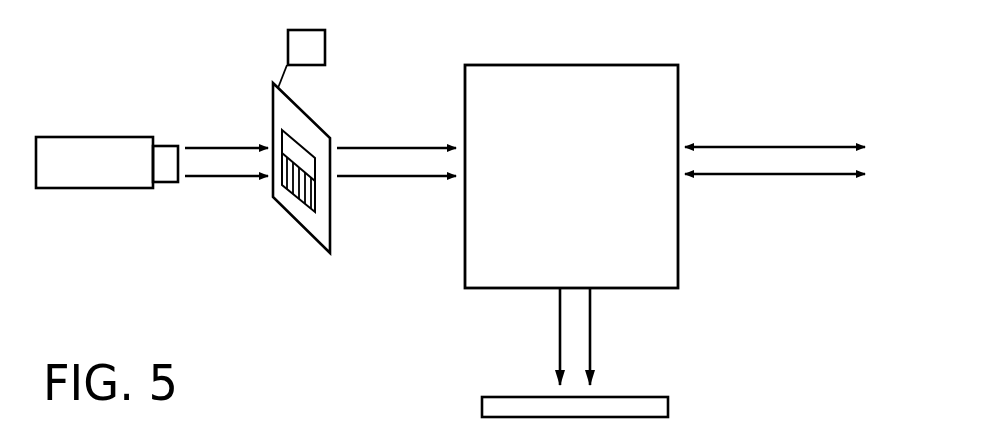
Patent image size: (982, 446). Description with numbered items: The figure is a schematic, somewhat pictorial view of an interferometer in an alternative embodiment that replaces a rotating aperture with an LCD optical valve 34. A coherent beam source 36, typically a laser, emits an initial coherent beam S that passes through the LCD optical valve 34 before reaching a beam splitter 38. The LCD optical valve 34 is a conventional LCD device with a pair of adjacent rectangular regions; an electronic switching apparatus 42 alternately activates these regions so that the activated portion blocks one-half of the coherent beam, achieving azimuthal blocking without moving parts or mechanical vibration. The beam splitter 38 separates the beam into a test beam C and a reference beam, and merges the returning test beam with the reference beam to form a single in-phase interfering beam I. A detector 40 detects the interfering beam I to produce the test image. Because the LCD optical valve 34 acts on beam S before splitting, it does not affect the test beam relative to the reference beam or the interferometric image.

The LCD optical valve 34 is at (283, 120).
The coherent beam source 36 is at (62, 175).
The beam splitter 38 is at (643, 103).
The detector 40 is at (635, 405).
The electronic switching apparatus 42 is at (297, 45).
The initial coherent beam S is at (379, 130).
The test beam C is at (773, 130).
The interfering beam I is at (546, 333).